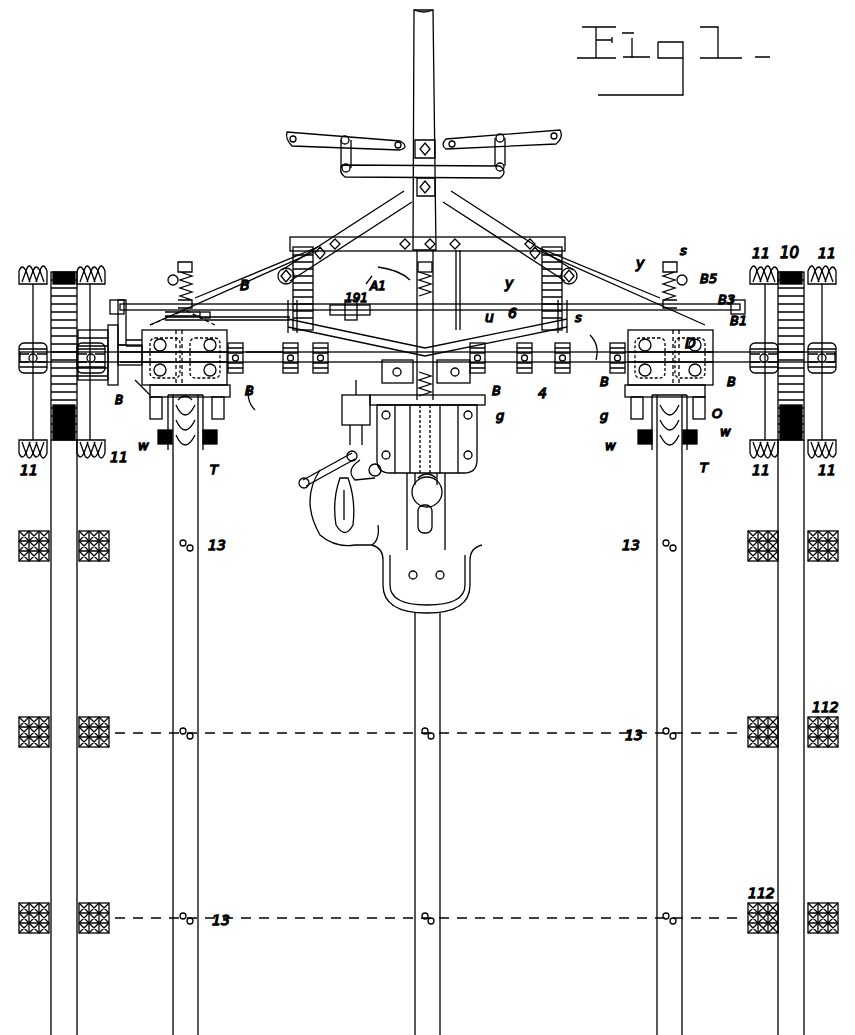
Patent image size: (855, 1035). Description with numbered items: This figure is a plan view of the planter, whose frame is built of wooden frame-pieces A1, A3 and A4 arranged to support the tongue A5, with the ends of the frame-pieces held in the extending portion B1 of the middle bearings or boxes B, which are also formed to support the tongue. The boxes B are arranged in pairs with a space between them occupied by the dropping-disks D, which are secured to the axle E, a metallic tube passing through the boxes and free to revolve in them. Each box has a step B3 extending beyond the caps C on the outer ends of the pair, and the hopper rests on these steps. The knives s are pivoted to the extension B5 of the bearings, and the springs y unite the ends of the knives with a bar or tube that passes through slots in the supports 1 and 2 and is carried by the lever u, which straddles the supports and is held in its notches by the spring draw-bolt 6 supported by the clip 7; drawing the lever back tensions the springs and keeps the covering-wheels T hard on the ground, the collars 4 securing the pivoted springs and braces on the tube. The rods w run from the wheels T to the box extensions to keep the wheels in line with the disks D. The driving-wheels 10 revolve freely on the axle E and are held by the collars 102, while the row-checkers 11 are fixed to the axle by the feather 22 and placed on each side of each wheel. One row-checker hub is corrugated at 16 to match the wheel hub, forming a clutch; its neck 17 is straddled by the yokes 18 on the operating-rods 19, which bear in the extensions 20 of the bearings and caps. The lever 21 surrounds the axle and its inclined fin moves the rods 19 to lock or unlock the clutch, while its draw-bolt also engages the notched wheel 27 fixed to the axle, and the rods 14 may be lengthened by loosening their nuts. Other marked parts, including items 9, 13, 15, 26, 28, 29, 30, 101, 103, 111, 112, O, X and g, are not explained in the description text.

The support 1 is at (313, 288).
The support 2 is at (542, 288).
The collars 4 is at (330, 380).
The spring draw-bolt 6 is at (443, 492).
The clip 7 is at (433, 434).
The main axle 9 is at (427, 339).
The driving-wheels 10 is at (65, 342).
The row-checkers 11 is at (62, 351).
The stem / rail 13 is at (414, 824).
The rods 14 is at (131, 370).
The collar 15 is at (109, 337).
The corrugation 16 is at (93, 367).
The neck 17 is at (133, 357).
The yokes 18 is at (164, 303).
The operating-rods 19 is at (176, 304).
The extensions 20 is at (234, 286).
The lever 21 is at (345, 412).
The feather 22 is at (376, 477).
The lever arm 26 is at (340, 450).
The notched wheel 27 is at (338, 517).
The bracket 28 is at (344, 513).
The guide bars 29 is at (480, 452).
The cup 30 is at (470, 540).
The gear support 101 is at (125, 402).
The collars 102 is at (52, 642).
The gear casing 103 is at (121, 374).
The star wheel shaft 111 is at (125, 301).
The grid block 112 is at (34, 723).
The frame-piece A1 is at (520, 232).
The frame-piece A3 is at (467, 290).
The frame-piece A4 is at (427, 245).
The tongue A5 is at (407, 130).
The bearings B is at (427, 295).
The extending portion B1 is at (240, 322).
The step B3 is at (167, 317).
The extension B5 is at (170, 285).
The caps C is at (345, 237).
The dropping-disks D is at (184, 357).
The axle E is at (594, 343).
The roller O is at (170, 420).
The wheels T is at (475, 468).
The clamp X is at (350, 304).
The link g is at (253, 404).
The knives s is at (430, 325).
The lever u is at (427, 316).
The rods w is at (200, 425).
The springs y is at (388, 270).